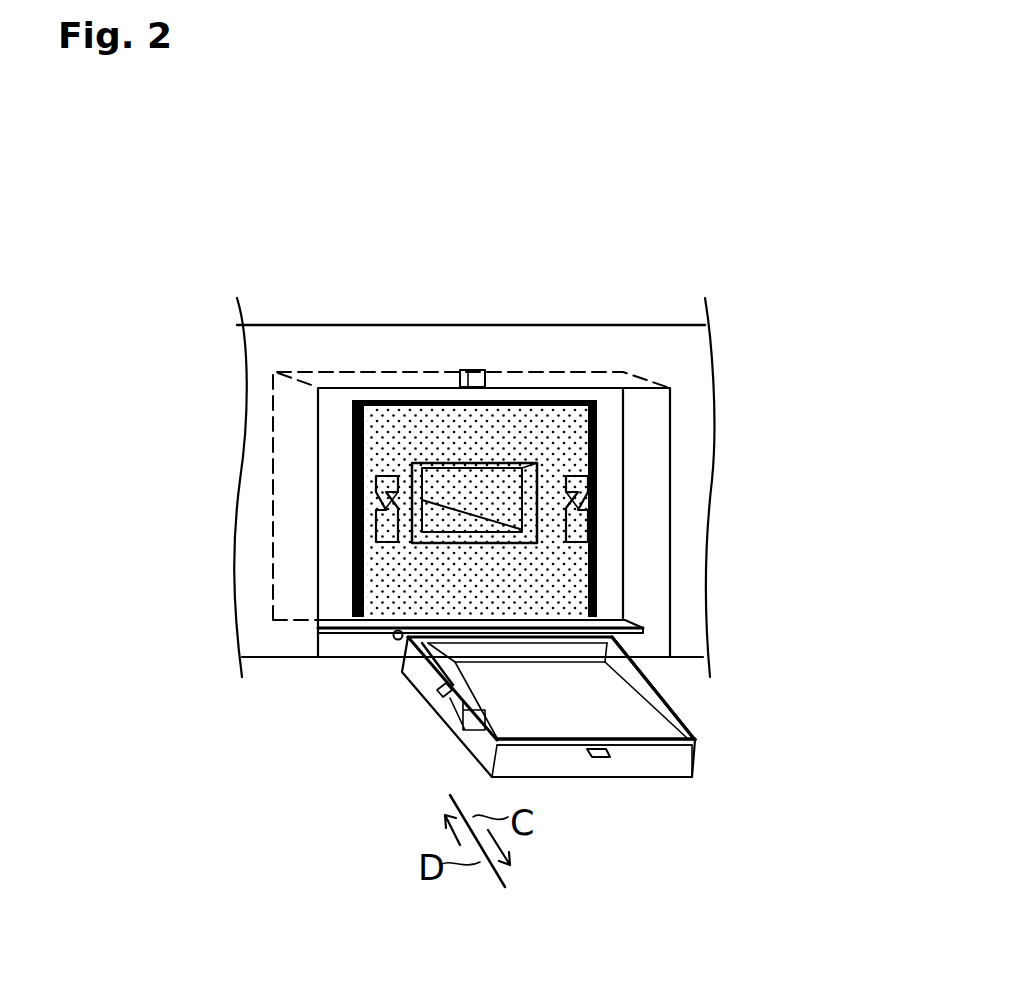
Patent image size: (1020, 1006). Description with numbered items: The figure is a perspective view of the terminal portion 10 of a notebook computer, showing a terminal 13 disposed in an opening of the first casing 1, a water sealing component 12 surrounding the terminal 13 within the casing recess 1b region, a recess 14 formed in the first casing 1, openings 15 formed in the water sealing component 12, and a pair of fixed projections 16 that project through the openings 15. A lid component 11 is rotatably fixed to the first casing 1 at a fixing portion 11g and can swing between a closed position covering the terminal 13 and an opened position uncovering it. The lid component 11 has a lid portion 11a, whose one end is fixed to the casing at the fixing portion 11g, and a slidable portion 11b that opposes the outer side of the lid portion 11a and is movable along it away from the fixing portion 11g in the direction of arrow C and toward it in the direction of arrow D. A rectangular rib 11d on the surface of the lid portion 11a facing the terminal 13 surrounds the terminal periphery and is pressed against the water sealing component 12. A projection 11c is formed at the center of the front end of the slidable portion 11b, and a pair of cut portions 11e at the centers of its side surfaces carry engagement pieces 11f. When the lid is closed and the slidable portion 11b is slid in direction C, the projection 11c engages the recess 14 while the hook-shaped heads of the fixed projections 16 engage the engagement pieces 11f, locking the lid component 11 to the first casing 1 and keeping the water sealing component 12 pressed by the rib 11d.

The first casing 1 is at (316, 325).
The recess of housing 1b is at (679, 372).
The terminal portion 10 is at (630, 277).
The lid component 11 is at (564, 739).
The lid portion 11a is at (787, 745).
The slidable portion 11b is at (665, 757).
The projection 11c is at (605, 760).
The rib 11d is at (653, 688).
The cut portions 11e is at (468, 722).
The engagement pieces 11f is at (440, 692).
The fixing portion 11g is at (400, 640).
The water sealing component 12 is at (568, 573).
The terminal 13 is at (503, 502).
The recess 14 is at (473, 368).
The openings 15 is at (573, 487).
The fixed projections 16 is at (385, 522).